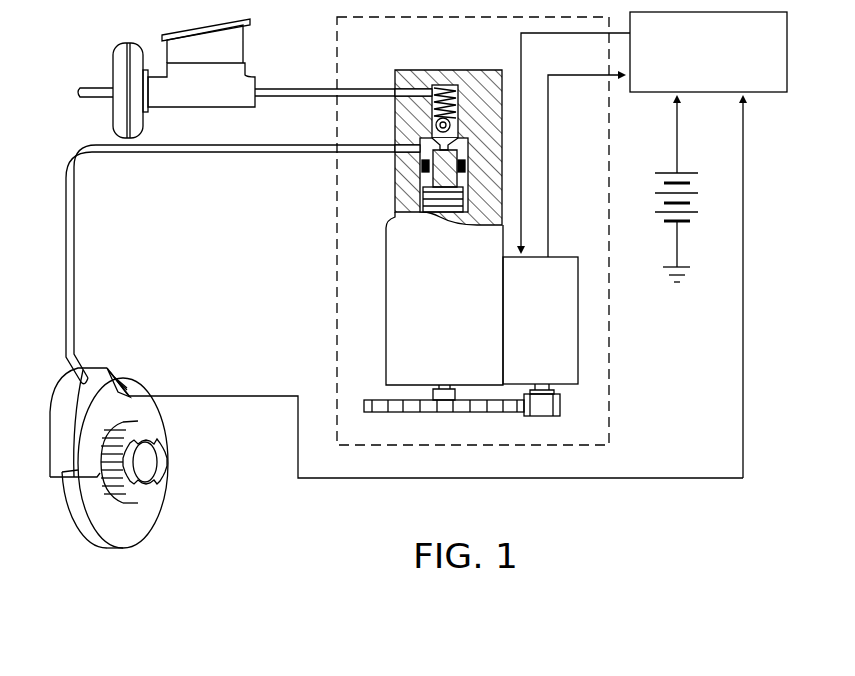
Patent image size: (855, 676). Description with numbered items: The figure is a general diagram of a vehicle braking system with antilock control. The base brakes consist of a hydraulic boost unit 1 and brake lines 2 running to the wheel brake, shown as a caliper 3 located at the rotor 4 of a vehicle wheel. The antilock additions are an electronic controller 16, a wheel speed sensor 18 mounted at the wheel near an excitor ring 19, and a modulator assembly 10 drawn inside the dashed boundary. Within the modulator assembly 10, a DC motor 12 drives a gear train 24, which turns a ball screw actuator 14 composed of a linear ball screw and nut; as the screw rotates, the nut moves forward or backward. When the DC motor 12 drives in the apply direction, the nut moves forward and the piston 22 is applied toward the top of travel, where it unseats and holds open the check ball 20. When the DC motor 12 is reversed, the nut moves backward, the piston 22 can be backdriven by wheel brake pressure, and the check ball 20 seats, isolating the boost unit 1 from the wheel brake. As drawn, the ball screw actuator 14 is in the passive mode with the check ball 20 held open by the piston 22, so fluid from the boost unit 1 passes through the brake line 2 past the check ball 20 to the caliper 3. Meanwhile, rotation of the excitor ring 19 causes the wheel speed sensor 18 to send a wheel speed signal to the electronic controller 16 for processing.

The hydraulic boost unit 1 is at (118, 78).
The brake lines 2 is at (324, 91).
The caliper 3 is at (101, 408).
The rotor 4 is at (130, 522).
The modulator assembly 10 is at (337, 263).
The DC motor 12 is at (563, 277).
The ball screw actuator 14 is at (407, 327).
The electronic controller 16 is at (772, 77).
The wheel speed sensor 18 is at (120, 385).
The excitor ring 19 is at (158, 457).
The check ball 20 is at (437, 127).
The piston 22 is at (430, 182).
The gear train 24 is at (385, 410).